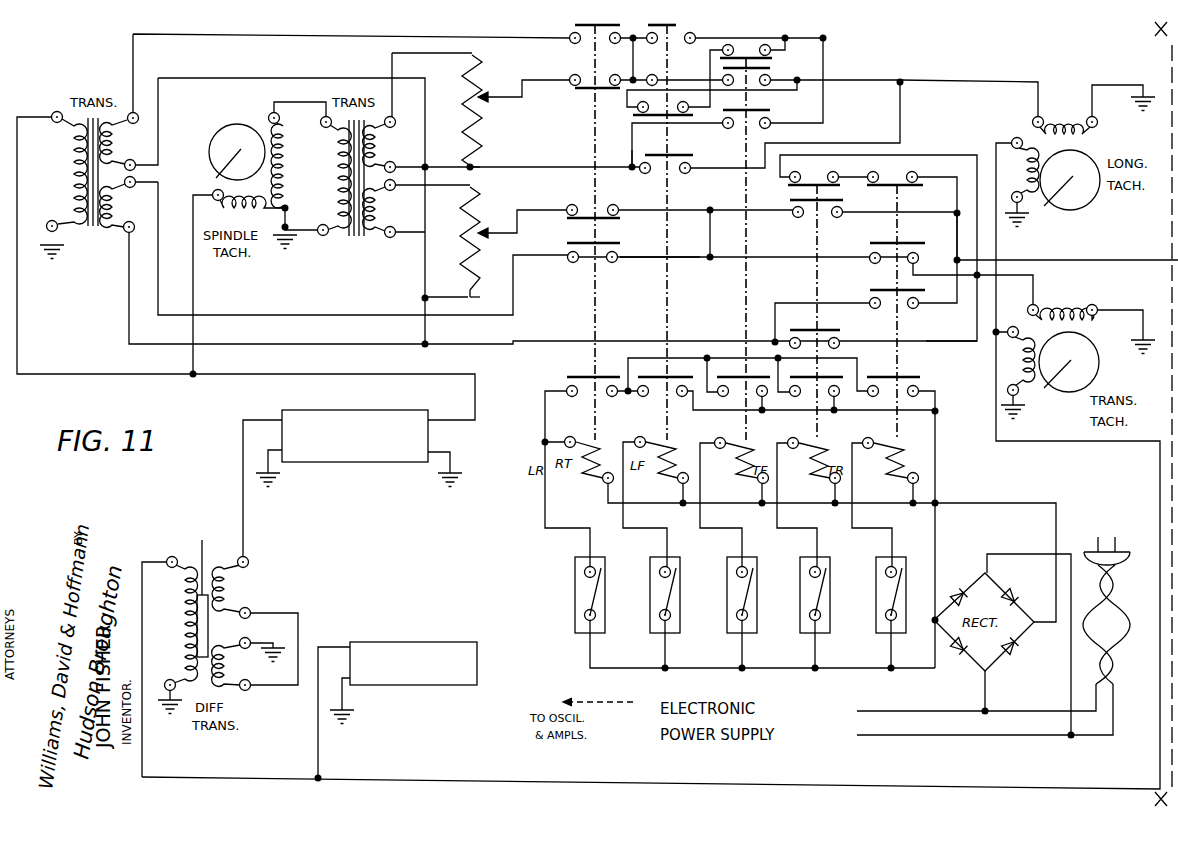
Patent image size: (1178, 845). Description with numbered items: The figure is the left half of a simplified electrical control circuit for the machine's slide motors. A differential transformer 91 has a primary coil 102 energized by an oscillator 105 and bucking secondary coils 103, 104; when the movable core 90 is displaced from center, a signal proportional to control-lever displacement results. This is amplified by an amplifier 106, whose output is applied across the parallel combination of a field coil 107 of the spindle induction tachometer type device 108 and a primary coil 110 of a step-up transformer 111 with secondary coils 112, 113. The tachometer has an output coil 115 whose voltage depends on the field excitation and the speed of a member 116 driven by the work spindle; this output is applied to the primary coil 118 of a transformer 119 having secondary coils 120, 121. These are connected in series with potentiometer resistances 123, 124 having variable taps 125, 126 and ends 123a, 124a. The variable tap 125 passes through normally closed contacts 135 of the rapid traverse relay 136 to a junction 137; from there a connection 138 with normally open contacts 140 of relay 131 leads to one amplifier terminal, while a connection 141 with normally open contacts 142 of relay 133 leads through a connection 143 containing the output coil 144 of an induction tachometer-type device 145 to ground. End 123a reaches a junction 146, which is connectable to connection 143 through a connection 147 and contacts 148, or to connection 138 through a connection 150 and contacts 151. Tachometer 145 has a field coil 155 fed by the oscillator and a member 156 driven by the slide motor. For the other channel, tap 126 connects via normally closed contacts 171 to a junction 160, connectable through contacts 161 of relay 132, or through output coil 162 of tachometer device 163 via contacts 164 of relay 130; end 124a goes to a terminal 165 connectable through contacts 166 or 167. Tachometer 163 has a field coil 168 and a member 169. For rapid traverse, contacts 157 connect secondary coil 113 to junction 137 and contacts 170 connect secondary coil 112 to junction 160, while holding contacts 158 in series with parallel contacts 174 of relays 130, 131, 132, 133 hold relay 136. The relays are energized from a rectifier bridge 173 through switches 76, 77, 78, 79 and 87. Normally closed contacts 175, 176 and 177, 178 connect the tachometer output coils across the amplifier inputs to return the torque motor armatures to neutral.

The switch 76 is at (727, 610).
The switch 77 is at (800, 610).
The switch 78 is at (650, 614).
The switch 79 is at (876, 610).
The switch 87 is at (575, 610).
The movable core 90 is at (197, 626).
The differential transformer 91 is at (240, 592).
The primary coil 102 is at (180, 588).
The secondary coil 103 is at (252, 568).
The secondary coil 104 is at (226, 663).
The oscillator 105 is at (410, 685).
The amplifier 106 is at (336, 466).
The field coil 107 is at (193, 214).
The induction tachometer type device 108 is at (237, 118).
The primary coil 110 is at (68, 152).
The transformer 111 is at (93, 233).
The secondary coil 112 is at (125, 144).
The secondary coil 113 is at (125, 207).
The output coil 115 is at (289, 162).
The member 116 is at (213, 158).
The primary coil 118 is at (334, 197).
The transformer 119 is at (353, 242).
The secondary coil 120 is at (391, 209).
The secondary coil 121 is at (391, 146).
The potentiometer resistance 123 is at (478, 196).
The end of potentiometer resistance 123a is at (441, 304).
The potentiometer resistance 124 is at (484, 126).
The end of potentiometer resistance 124a is at (526, 172).
The variable tap 125 is at (520, 242).
The variable tap 126 is at (492, 92).
The relay 130 is at (746, 436).
The relay 131 is at (820, 436).
The relay 132 is at (664, 434).
The relay 133 is at (898, 436).
The normally closed contacts 135 is at (583, 204).
The rapid traverse relay 136 is at (598, 424).
The junction 137 is at (730, 196).
The connection 138 is at (955, 213).
The normally open contacts 140 is at (830, 220).
The connection 141 is at (760, 257).
The normally open contacts 142 is at (880, 265).
The connection 143 is at (1040, 303).
The output coil 144 is at (1092, 305).
The induction tachometer-type device 145 is at (1076, 410).
The junction 146 is at (772, 335).
The connection 147 is at (931, 346).
The normally open contacts 148 is at (842, 348).
The connection 150 is at (868, 310).
The normally open contacts 151 is at (908, 310).
The field coil 155 is at (1008, 370).
The member 156 is at (1098, 370).
The normally open contacts 157 is at (602, 265).
The normally open contacts 158 is at (582, 396).
The junction 160 is at (637, 80).
The normally open contacts 161 is at (690, 33).
The output coil 162 is at (1080, 118).
The tachometer device 163 is at (1088, 213).
The normally open contacts 164 is at (774, 68).
The terminal 165 is at (630, 165).
The normally open contacts 166 is at (660, 176).
The normally open contacts 167 is at (738, 128).
The field coil 168 is at (1008, 150).
The member 169 is at (1099, 190).
The normally open contacts 170 is at (582, 45).
The normally closed contacts 171 is at (585, 64).
The rectifier bridge 173 is at (976, 572).
The normally open contacts 174 is at (654, 397).
The normally closed contacts 175 is at (749, 45).
The normally closed contacts 176 is at (670, 98).
The normally closed contacts 177 is at (826, 170).
The normally closed contacts 178 is at (890, 178).